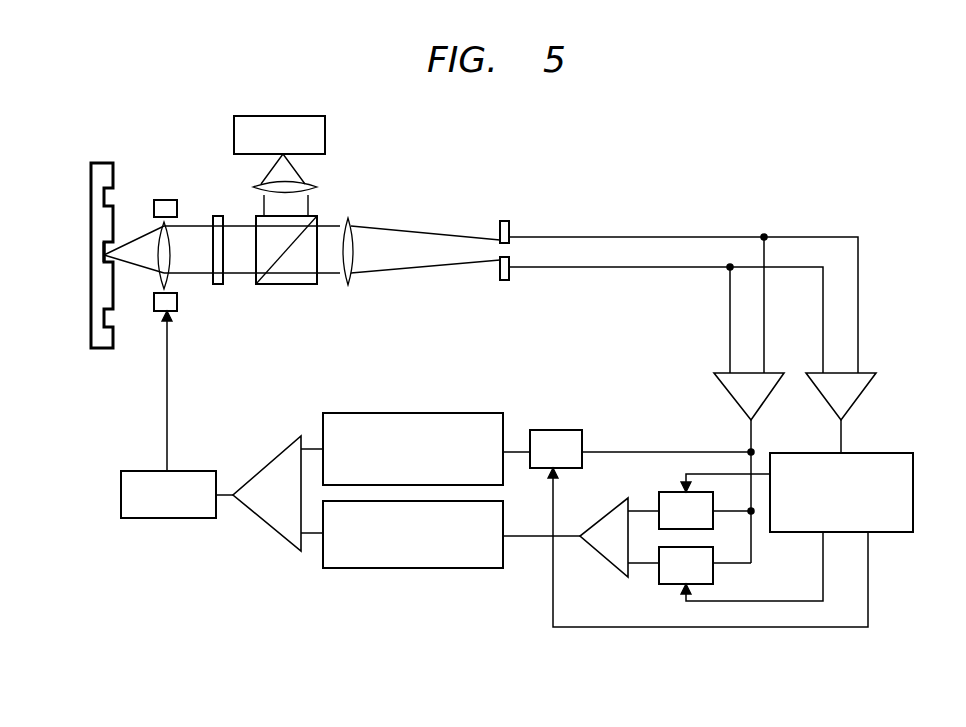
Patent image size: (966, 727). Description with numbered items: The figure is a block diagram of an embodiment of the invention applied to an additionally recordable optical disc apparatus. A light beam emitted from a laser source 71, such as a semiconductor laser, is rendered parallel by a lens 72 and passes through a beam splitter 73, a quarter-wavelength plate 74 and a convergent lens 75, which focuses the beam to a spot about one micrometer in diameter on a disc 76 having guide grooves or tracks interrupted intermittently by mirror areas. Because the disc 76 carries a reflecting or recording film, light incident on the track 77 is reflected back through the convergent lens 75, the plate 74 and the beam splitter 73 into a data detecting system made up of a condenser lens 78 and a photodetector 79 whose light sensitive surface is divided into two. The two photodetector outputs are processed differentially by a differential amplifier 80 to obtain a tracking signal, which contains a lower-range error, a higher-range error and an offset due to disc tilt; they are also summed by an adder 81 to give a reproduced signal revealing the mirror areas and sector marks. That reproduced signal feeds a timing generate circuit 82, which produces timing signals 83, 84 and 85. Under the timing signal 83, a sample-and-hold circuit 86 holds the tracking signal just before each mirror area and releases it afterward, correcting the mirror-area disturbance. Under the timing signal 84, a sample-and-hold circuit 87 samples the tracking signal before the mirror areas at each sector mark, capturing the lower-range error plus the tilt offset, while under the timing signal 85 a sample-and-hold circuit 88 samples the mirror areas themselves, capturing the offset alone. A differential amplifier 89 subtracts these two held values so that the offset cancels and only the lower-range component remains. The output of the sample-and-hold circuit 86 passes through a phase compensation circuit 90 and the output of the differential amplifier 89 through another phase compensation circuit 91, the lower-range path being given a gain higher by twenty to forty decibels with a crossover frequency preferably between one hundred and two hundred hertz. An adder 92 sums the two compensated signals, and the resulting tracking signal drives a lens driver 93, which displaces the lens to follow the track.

The laser source 71 is at (287, 116).
The lens 72 is at (313, 188).
The beam splitter 73 is at (292, 287).
The λ/4 plate 74 is at (218, 216).
The convergent lens 75 is at (152, 277).
The disc 76 is at (100, 163).
The track 77 is at (102, 198).
The condenser lens 78 is at (353, 222).
The photodetector 79 is at (505, 221).
The differential amplifier 80 is at (742, 408).
The adder 81 is at (848, 410).
The timing generate circuit 82 is at (913, 480).
The timing signal 83 is at (868, 603).
The timing signal 84 is at (760, 474).
The timing signal 85 is at (823, 585).
The sample-and-hold circuit 86 is at (565, 430).
The sample-and-hold circuit 87 is at (662, 492).
The sample-and-hold circuit 88 is at (670, 584).
The differential amplifier 89 is at (610, 575).
The phase compensation circuit 90 is at (415, 413).
The phase compensation circuit 91 is at (458, 569).
The adder 92 is at (283, 538).
The lens driver 93 is at (195, 518).